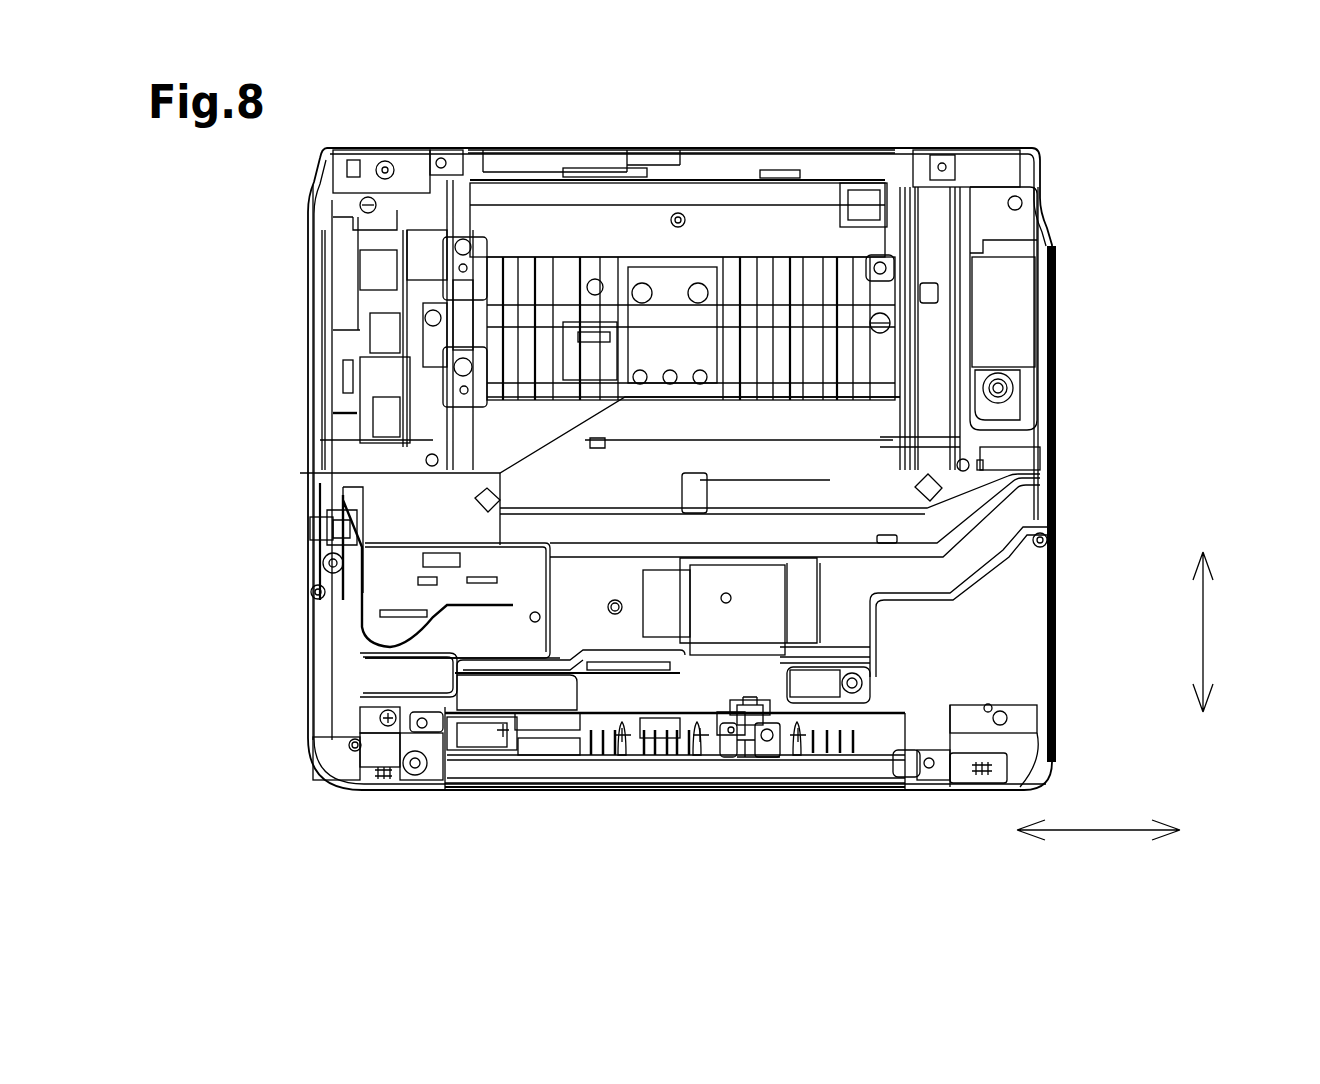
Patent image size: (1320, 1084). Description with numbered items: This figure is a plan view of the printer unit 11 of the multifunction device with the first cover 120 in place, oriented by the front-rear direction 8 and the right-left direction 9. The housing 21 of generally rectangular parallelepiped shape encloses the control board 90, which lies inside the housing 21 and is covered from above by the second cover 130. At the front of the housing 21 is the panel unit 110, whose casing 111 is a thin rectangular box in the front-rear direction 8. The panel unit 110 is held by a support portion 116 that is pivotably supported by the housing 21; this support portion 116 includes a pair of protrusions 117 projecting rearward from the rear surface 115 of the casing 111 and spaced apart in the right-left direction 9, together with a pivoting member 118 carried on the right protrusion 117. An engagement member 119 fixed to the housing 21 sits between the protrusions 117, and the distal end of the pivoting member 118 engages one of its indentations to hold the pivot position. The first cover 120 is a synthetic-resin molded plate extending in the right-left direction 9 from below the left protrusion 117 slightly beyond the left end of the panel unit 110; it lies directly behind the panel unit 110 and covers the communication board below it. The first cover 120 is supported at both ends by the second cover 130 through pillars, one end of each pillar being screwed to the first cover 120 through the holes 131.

The scanner unit body 11 is at (676, 469).
The housing 21 is at (1057, 413).
The control board 90 is at (620, 687).
The second cover 130 is at (480, 688).
The holes 131 is at (418, 724).
The engagement member 119 is at (747, 705).
The pivoting member 118 is at (763, 723).
The panel unit 110 is at (592, 815).
The casing 111 is at (515, 775).
The first cover 120 is at (480, 737).
The rear surface 115 is at (620, 740).
The protrusions 117 is at (730, 760).
The support portion 116 is at (743, 763).
The front-rear direction 8 is at (1205, 634).
The right-left direction 9 is at (1098, 827).